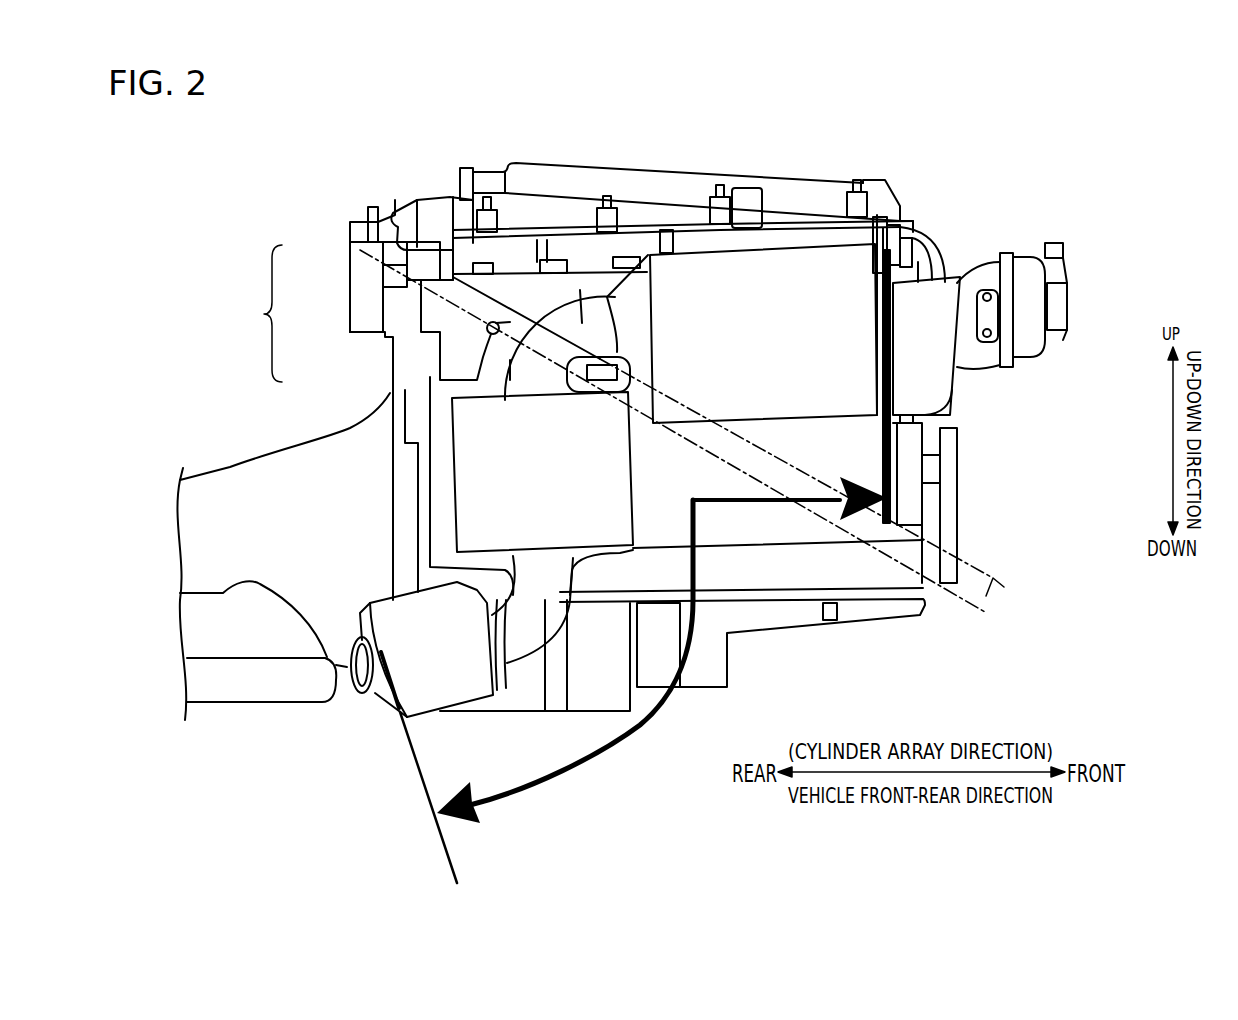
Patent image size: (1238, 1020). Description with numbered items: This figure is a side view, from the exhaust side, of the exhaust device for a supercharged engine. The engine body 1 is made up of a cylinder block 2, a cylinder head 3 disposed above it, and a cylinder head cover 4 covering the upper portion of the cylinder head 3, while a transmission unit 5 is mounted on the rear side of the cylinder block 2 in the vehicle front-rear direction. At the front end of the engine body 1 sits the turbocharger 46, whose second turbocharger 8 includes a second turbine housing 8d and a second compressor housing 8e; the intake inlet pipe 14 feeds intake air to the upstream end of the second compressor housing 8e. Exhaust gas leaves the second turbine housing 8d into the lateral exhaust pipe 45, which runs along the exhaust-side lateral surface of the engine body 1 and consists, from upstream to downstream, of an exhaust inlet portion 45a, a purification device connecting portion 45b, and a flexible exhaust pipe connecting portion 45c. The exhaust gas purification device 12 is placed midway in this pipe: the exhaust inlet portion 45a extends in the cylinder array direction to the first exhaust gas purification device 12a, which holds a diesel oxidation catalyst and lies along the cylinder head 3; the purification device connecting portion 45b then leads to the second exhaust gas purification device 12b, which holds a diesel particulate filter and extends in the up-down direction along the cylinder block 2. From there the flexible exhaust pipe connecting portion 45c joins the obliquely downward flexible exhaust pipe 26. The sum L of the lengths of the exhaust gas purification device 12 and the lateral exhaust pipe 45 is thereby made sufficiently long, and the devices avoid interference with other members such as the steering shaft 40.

The engine body 1 is at (266, 313).
The cylinder block 2 is at (437, 430).
The cylinder head 3 is at (427, 300).
The cylinder head cover 4 is at (445, 252).
The transmission unit 5 is at (230, 483).
The second turbocharger 8 is at (1015, 281).
The turbocharger 46 is at (1015, 281).
The second turbine housing 8d is at (923, 297).
The second compressor housing 8e is at (1020, 257).
The exhaust gas purification device 12 is at (664, 332).
The first exhaust gas purification device 12a is at (747, 283).
The second exhaust gas purification device 12b is at (600, 472).
The intake inlet pipe 14 is at (1053, 303).
The flexible exhaust pipe 26 is at (453, 680).
The steering shaft 40 is at (975, 545).
The lateral exhaust pipe 45 is at (715, 437).
The exhaust inlet portion 45a is at (945, 282).
The purification device connecting portion 45b is at (580, 290).
The flexible exhaust pipe connecting portion 45c is at (530, 627).
The sum of lengths L is at (662, 650).